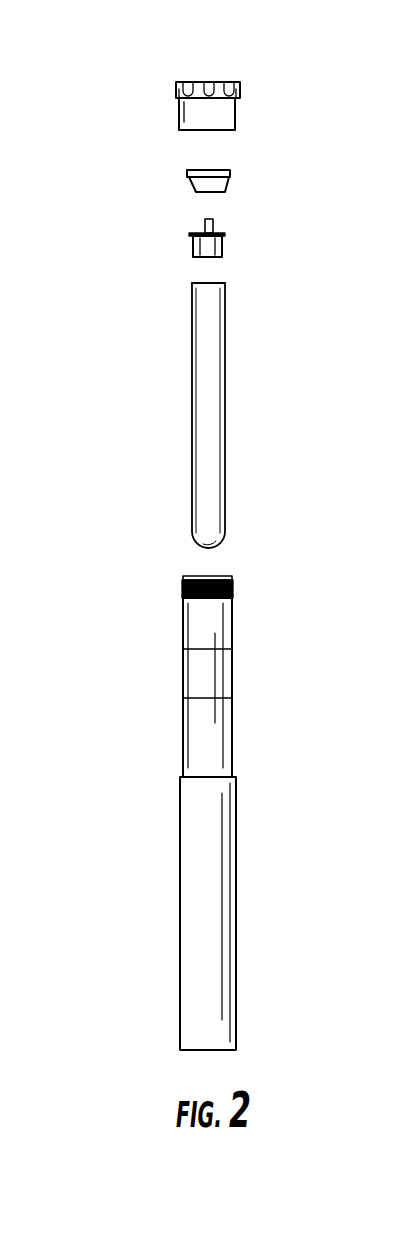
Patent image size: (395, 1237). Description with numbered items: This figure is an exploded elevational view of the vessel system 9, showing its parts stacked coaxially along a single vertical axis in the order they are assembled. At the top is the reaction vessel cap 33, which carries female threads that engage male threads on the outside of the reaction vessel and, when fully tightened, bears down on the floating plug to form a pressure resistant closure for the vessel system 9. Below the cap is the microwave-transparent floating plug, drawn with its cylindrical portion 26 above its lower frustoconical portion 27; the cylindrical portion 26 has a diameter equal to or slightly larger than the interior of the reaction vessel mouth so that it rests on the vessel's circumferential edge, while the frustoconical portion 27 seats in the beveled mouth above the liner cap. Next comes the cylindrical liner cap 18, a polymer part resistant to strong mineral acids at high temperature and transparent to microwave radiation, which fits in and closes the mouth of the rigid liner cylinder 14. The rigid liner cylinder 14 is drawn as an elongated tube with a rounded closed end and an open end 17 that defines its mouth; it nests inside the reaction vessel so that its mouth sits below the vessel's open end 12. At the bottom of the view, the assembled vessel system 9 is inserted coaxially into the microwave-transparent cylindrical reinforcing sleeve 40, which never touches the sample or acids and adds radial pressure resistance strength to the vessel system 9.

The vessel system 9 is at (97, 112).
The reaction vessel cap 33 is at (218, 114).
The cylindrical portion 26 is at (187, 178).
The lower frustoconical portion 27 is at (208, 190).
The cylindrical liner cap 18 is at (224, 245).
The open end 17 is at (198, 274).
The rigid liner cylinder 14 is at (212, 340).
The open end 12 is at (190, 562).
The cylindrical reinforcing sleeve 40 is at (215, 907).